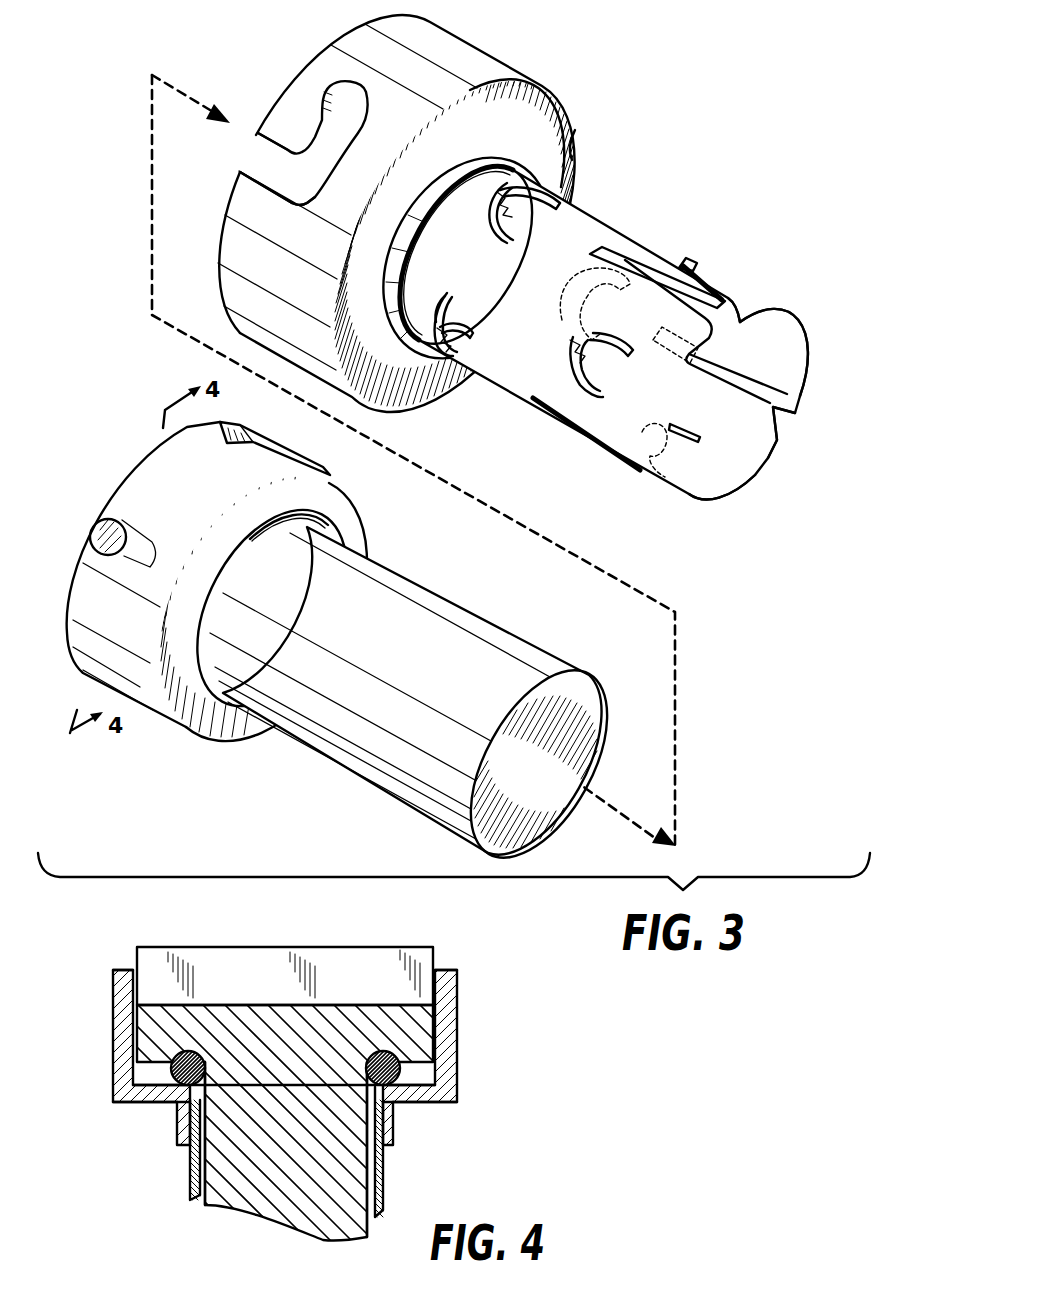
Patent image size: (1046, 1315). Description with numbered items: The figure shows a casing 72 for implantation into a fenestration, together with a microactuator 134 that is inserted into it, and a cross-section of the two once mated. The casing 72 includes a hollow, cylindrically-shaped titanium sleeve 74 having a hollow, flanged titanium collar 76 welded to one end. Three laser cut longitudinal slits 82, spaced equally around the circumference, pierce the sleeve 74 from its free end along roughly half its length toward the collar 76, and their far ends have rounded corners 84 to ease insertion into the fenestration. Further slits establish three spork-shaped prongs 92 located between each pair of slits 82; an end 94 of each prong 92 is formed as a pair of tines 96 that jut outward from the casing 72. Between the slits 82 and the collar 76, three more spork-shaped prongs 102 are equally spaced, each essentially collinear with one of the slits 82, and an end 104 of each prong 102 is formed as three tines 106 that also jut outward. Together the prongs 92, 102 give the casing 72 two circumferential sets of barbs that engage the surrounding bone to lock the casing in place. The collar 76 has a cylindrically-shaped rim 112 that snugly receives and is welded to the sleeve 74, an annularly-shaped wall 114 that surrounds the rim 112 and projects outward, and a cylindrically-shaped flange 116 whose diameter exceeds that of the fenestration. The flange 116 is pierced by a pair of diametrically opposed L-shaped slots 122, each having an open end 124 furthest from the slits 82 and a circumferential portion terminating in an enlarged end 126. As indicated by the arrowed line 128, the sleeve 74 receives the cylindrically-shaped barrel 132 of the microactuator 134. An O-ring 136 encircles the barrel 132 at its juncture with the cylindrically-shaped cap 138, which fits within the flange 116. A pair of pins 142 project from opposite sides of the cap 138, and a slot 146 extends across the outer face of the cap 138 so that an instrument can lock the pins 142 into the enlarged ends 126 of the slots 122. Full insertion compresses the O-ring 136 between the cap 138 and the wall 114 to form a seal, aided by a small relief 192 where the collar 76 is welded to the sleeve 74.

In FIG. 3, the casing 72 is at (693, 180).
In FIG. 3, the sleeve 74 is at (617, 228).
In FIG. 4, the sleeve 74 is at (190, 1167).
In FIG. 3, the collar 76 is at (587, 160).
In FIG. 4, the collar 76 is at (458, 1064).
In FIG. 3, the longitudinal slits 82 is at (733, 308).
In FIG. 3, the rounded corners 84 is at (743, 318).
In FIG. 3, the prongs 92 is at (720, 290).
In FIG. 3, the end of prong 94 is at (697, 268).
In FIG. 3, the tines 96 is at (688, 260).
In FIG. 3, the prongs 102 is at (535, 207).
In FIG. 3, the end of prong 104 is at (513, 215).
In FIG. 3, the tines 106 is at (575, 130).
In FIG. 3, the rim 112 is at (460, 160).
In FIG. 4, the rim 112 is at (393, 1133).
In FIG. 3, the wall 114 is at (540, 105).
In FIG. 4, the wall 114 is at (453, 1103).
In FIG. 3, the flange 116 is at (437, 42).
In FIG. 4, the flange 116 is at (458, 1018).
In FIG. 3, the L-shaped slots 122 is at (297, 185).
In FIG. 3, the open end 124 is at (248, 152).
In FIG. 3, the enlarged end 126 is at (351, 97).
In FIG. 3, the arrowed line 128 is at (677, 708).
In FIG. 3, the barrel 132 is at (497, 648).
In FIG. 4, the barrel 132 is at (286, 1149).
In FIG. 3, the microactuator 134 is at (362, 520).
In FIG. 4, the microactuator 134 is at (318, 1243).
In FIG. 3, the O-ring 136 is at (302, 517).
In FIG. 4, the O-ring 136 is at (384, 1052).
In FIG. 3, the cap 138 is at (147, 492).
In FIG. 4, the cap 138 is at (230, 947).
In FIG. 3, the pins 142 is at (105, 525).
In FIG. 3, the slot 146 is at (232, 428).
In FIG. 4, the slot 146 is at (373, 962).
In FIG. 4, the relief 192 is at (178, 1132).